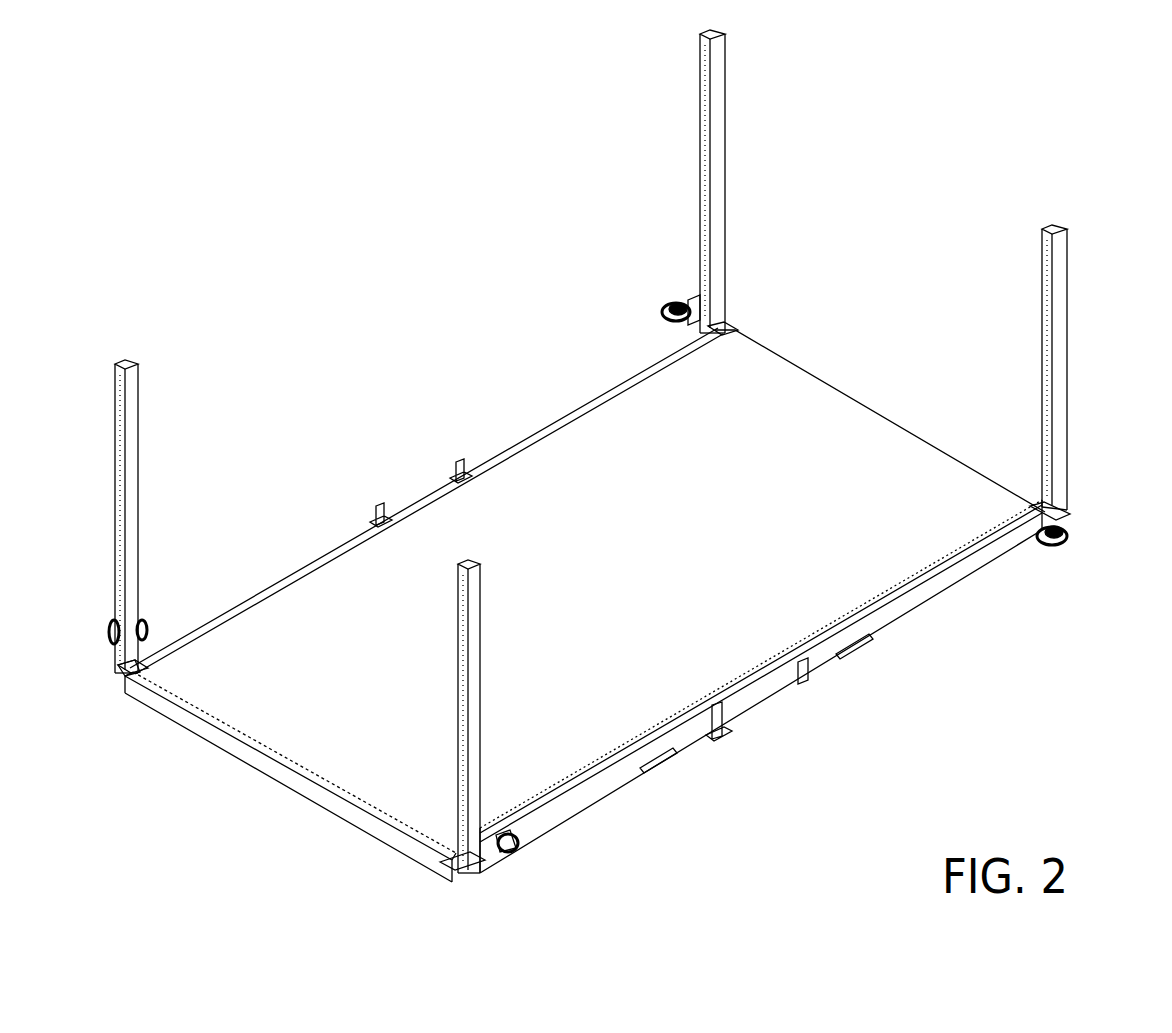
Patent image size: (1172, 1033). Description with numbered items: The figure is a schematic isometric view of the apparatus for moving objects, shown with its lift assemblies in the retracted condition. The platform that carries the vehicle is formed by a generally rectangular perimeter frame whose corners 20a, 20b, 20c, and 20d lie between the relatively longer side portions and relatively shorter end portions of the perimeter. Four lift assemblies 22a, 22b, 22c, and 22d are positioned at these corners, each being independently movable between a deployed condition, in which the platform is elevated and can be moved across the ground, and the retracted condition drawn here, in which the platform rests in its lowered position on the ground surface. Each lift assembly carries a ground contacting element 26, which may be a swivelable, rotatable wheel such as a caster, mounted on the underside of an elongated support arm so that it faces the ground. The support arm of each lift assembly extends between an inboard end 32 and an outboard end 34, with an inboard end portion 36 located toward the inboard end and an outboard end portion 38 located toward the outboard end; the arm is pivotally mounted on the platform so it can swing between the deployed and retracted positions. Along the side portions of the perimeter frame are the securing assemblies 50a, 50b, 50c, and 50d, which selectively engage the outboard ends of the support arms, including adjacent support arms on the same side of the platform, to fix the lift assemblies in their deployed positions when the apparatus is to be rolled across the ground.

The corner 20a is at (133, 718).
The corner 20b is at (447, 893).
The corner 20c is at (1087, 520).
The corner 20d is at (740, 322).
The lift assembly 22a is at (80, 648).
The lift assembly 22b is at (532, 858).
The lift assembly 22c is at (1077, 483).
The lift assembly 22d is at (672, 262).
The ground contacting element 26 is at (660, 318).
The inboard end 32 is at (440, 836).
The outboard end 34 is at (478, 577).
The inboard end portion 36 is at (138, 672).
The outboard end portion 38 is at (140, 390).
The securing assembly 50a is at (365, 490).
The securing assembly 50b is at (735, 750).
The securing assembly 50c is at (815, 693).
The securing assembly 50d is at (460, 445).